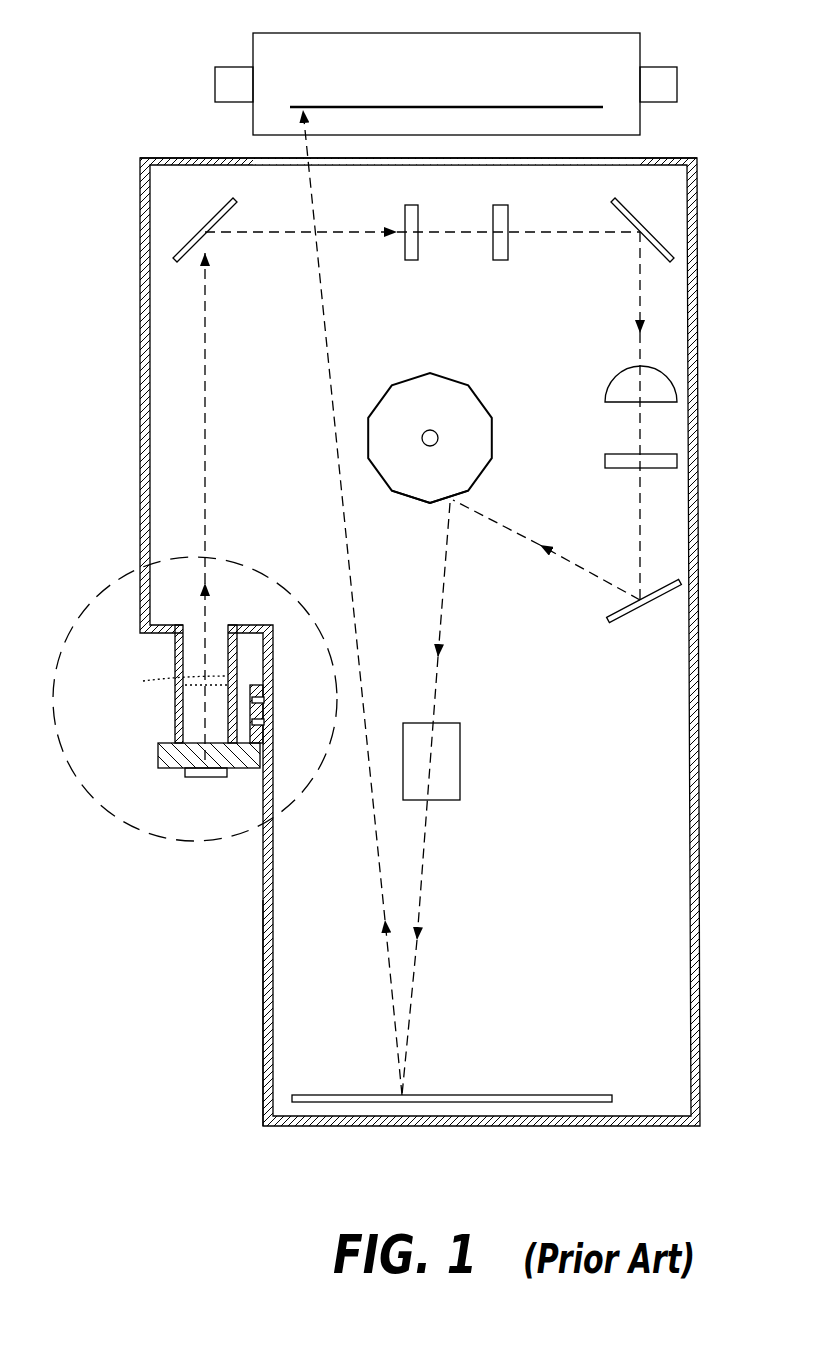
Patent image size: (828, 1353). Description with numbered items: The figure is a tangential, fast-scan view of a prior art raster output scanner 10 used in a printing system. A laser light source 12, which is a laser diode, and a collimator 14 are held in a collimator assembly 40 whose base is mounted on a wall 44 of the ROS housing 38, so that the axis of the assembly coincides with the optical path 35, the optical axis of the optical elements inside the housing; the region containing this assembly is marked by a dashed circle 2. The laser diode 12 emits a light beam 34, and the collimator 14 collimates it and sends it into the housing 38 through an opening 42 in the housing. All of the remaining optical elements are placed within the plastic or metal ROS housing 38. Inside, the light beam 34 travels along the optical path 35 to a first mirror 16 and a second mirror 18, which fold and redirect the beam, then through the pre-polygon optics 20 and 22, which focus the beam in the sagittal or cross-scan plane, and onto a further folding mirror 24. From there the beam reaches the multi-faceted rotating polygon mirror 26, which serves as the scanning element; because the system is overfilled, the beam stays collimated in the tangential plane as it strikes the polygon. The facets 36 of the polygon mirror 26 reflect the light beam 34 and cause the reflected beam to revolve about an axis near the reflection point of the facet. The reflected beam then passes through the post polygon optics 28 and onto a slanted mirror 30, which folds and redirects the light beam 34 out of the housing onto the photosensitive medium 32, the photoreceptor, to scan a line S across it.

The light source assembly detail region 2 is at (207, 842).
The raster output scanner 10 is at (130, 130).
The laser light source 12 is at (198, 780).
The collimator 14 is at (169, 692).
The mirror 16 is at (212, 213).
The mirror 18 is at (617, 203).
The pre-polygon optics 20 is at (500, 260).
The pre-polygon optics 22 is at (627, 372).
The mirror 24 is at (627, 618).
The rotating polygon mirror 26 is at (473, 407).
The post polygon optics 28 is at (460, 780).
The mirror 30 is at (580, 1095).
The photosensitive medium 32 is at (507, 33).
The light beam 34 is at (543, 233).
The optical path 35 is at (208, 460).
The facets 36 is at (450, 500).
The ROS housing 38 is at (698, 845).
The collimator assembly 40 is at (152, 718).
The opening 42 is at (220, 630).
The wall 44 is at (262, 903).
The line S is at (315, 105).